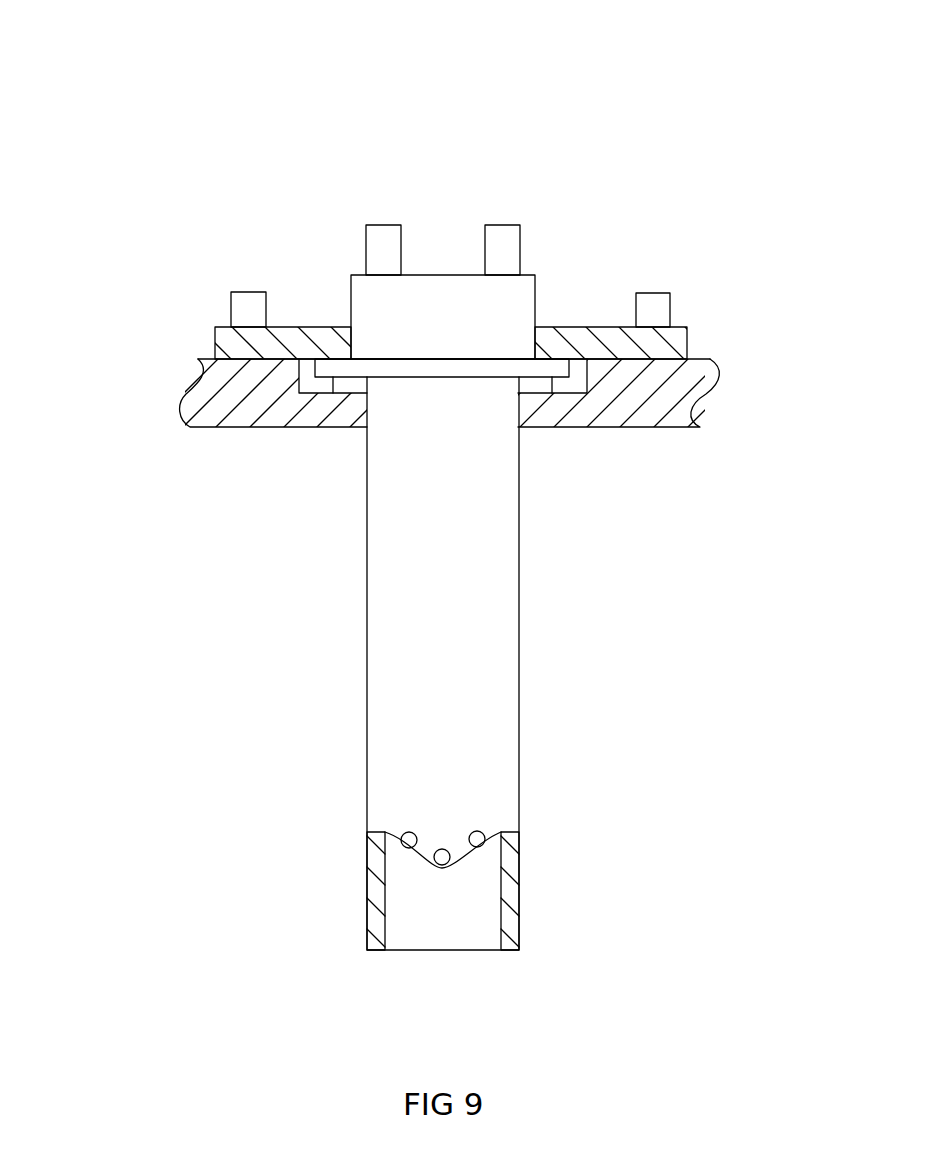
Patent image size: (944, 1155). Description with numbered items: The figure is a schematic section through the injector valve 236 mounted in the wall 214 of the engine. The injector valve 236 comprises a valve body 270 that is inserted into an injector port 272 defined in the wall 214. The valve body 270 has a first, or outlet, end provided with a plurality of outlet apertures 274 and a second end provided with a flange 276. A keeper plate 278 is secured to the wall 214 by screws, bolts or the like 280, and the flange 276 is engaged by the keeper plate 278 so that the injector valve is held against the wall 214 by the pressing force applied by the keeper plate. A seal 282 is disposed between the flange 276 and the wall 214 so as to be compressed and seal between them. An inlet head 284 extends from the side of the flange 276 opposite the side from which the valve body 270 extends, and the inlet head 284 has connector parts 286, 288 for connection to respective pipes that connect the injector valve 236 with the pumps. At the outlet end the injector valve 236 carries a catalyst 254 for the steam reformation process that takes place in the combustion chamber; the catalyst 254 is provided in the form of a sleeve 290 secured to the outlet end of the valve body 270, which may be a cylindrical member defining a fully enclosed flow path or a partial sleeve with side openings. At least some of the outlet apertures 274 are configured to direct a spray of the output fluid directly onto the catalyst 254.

The injector valve 236 is at (226, 121).
The wall 214 is at (642, 427).
The keeper plate 278 is at (214, 348).
The screws, bolts or the like 280 is at (253, 292).
The inlet head 284 is at (430, 290).
The connector part 286 is at (372, 233).
The connector part 288 is at (512, 247).
The flange 276 is at (340, 367).
The injector port 272 is at (365, 397).
The seal 282 is at (533, 382).
The valve body 270 is at (385, 569).
The sleeve 290 is at (367, 920).
The outlet apertures 274 is at (440, 855).
The catalyst 254 is at (560, 915).